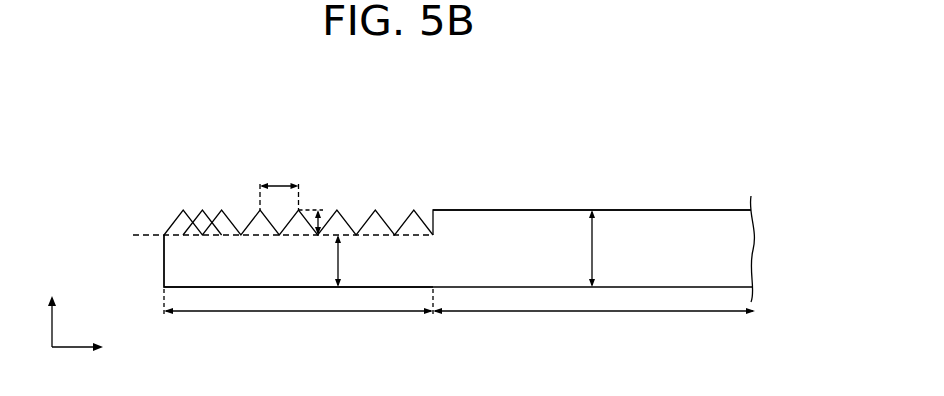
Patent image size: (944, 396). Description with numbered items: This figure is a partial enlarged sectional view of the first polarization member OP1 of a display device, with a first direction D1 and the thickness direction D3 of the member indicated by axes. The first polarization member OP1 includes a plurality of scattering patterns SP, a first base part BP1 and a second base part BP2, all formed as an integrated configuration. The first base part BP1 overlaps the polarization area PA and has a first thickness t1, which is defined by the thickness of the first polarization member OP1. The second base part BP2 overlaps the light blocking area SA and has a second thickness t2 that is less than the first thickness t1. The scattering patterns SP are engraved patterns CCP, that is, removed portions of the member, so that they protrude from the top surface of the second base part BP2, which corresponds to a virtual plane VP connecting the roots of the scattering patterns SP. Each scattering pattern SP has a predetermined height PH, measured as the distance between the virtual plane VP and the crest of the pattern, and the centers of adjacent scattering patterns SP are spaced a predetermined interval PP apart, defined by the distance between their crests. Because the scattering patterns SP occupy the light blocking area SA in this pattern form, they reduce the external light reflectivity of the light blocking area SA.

The first polarization member OP1 is at (630, 159).
The scattering patterns SP is at (177, 223).
The virtual plane VP is at (143, 237).
The first base part BP1 is at (515, 221).
The second base part BP2 is at (176, 266).
The engraved patterns CCP is at (208, 218).
The interval PP is at (279, 185).
The height PH is at (321, 220).
The first thickness t1 is at (602, 248).
The second thickness t2 is at (349, 261).
The light blocking area SA is at (298, 313).
The polarization area PA is at (594, 322).
The first direction D1 is at (90, 349).
The thickness direction D3 is at (52, 310).